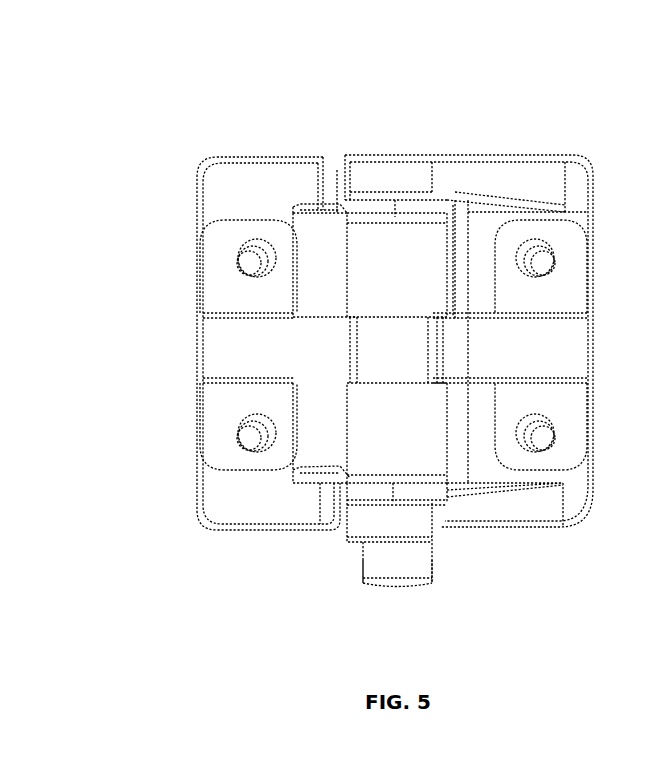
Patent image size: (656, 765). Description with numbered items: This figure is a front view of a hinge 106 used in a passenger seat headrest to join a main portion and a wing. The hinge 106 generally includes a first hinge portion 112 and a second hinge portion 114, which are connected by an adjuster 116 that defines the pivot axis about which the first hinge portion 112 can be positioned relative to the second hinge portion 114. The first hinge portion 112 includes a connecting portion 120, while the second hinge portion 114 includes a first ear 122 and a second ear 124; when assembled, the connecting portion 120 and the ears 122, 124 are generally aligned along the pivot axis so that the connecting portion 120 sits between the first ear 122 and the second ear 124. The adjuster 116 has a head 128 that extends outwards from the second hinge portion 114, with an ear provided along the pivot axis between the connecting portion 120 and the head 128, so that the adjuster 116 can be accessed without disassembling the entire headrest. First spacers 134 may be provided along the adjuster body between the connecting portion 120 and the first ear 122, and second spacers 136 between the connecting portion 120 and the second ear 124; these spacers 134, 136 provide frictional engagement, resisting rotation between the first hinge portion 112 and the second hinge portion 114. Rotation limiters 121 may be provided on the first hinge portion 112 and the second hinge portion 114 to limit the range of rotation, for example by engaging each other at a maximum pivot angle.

The hinge 106 is at (262, 101).
The first hinge portion 112 is at (223, 193).
The second hinge portion 114 is at (542, 180).
The adjuster 116 is at (410, 562).
The connecting portion 120 is at (377, 255).
The rotation limiters 121 is at (223, 337).
The first ear 122 is at (385, 165).
The second ear 124 is at (360, 518).
The head 128 is at (378, 568).
The first spacers 134 is at (360, 207).
The second spacers 136 is at (353, 488).